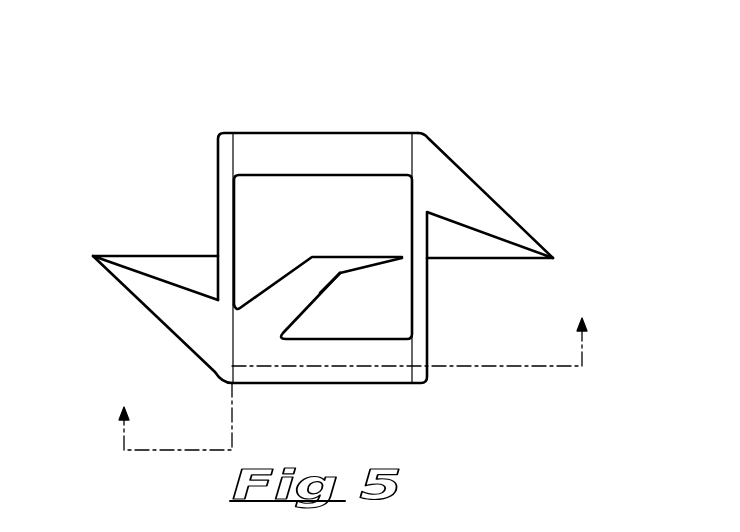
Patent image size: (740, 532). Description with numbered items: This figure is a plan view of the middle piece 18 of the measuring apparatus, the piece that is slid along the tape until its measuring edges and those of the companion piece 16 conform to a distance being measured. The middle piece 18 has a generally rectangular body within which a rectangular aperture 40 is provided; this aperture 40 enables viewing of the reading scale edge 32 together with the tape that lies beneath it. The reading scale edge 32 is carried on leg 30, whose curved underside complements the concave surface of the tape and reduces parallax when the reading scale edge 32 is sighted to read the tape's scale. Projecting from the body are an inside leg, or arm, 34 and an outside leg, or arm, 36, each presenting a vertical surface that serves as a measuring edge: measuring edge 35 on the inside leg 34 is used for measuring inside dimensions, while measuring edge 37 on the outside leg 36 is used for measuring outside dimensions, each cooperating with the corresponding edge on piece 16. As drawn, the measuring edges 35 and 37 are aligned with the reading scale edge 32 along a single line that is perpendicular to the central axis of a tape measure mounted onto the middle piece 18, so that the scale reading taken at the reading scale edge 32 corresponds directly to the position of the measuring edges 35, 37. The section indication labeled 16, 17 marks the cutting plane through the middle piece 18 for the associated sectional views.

The middle piece 18 is at (387, 103).
The rectangular aperture 40 is at (306, 176).
The reading scale edge 32 is at (357, 254).
The leg 30 is at (320, 290).
The inside leg 34 is at (497, 203).
The measuring edge 35 is at (465, 259).
The outside leg 36 is at (133, 297).
The measuring edge 37 is at (157, 256).
The piece 16 is at (134, 409).
The section line 17 is at (444, 321).